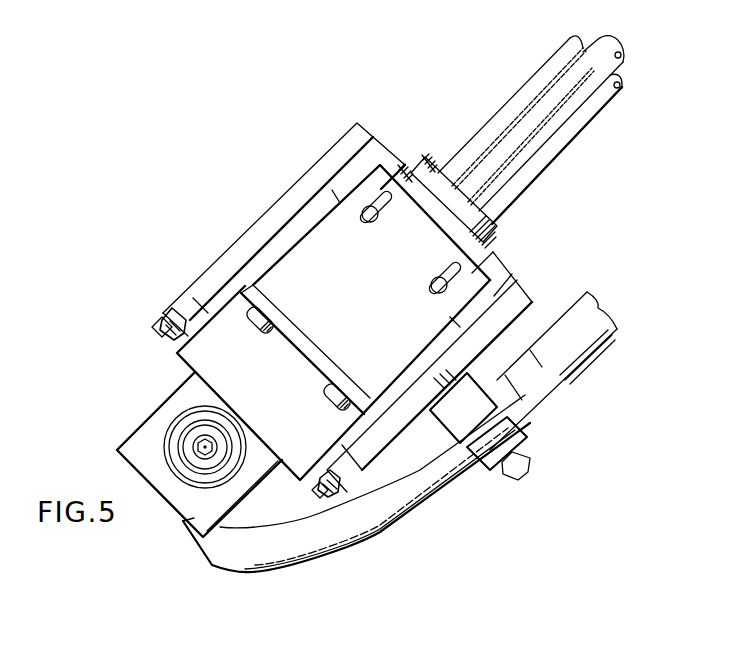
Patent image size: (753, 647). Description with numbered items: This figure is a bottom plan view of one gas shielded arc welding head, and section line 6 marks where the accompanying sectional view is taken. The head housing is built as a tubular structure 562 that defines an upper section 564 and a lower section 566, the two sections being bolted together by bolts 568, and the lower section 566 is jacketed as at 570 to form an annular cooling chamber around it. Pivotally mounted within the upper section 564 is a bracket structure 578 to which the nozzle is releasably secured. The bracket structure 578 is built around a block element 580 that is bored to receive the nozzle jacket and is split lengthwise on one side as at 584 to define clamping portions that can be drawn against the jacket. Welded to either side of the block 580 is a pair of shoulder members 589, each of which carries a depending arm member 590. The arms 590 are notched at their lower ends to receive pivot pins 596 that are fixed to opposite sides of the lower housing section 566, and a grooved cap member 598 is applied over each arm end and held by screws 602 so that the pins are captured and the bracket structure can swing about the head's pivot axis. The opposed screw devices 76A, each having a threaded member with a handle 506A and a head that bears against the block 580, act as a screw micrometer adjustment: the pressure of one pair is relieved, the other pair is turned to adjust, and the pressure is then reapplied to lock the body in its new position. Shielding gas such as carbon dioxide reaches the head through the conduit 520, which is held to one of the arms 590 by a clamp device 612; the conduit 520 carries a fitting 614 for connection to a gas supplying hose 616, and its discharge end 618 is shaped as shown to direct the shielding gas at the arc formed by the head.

The section line 6— 6 is at (370, 70).
The conduit 520 is at (356, 308).
The tubular structure 562 is at (349, 188).
The upper section 564 is at (307, 243).
The lower section 566 is at (137, 423).
The bolts 568 is at (258, 328).
The jacket 570 is at (203, 363).
The bracket structure 578 is at (570, 257).
The block element 580 is at (428, 198).
The split 584 is at (436, 214).
The shoulder members 589 is at (388, 150).
The arm members 590 is at (257, 223).
The pivot pins 596 is at (203, 313).
The cap member 598 is at (177, 307).
The screws 602 is at (160, 320).
The handle 506A is at (368, 222).
The screw devices 76A is at (358, 228).
The clamp device 612 is at (530, 438).
The fitting 614 is at (563, 402).
The gas supplying hose 616 is at (597, 350).
The discharge end 618 is at (273, 572).